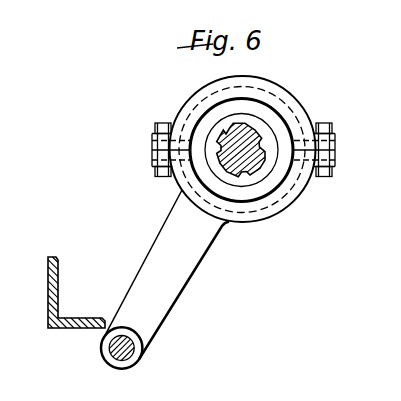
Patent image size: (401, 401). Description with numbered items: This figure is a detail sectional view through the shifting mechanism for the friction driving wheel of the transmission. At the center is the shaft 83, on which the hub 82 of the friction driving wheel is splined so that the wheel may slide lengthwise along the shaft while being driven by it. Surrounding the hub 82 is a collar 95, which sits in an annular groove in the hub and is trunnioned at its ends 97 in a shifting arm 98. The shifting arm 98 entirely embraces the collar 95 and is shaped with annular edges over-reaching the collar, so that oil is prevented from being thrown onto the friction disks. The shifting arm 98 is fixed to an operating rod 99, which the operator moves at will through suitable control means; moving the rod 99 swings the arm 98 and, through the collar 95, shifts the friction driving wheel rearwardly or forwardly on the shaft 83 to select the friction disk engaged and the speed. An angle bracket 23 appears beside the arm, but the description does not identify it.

The angle bracket 23 is at (58, 296).
The hub 82 is at (253, 176).
The shaft 83 is at (261, 162).
The collar 95 is at (292, 122).
The ends 97 is at (334, 148).
The shifting arm 98 is at (186, 266).
The operating rod 99 is at (132, 355).